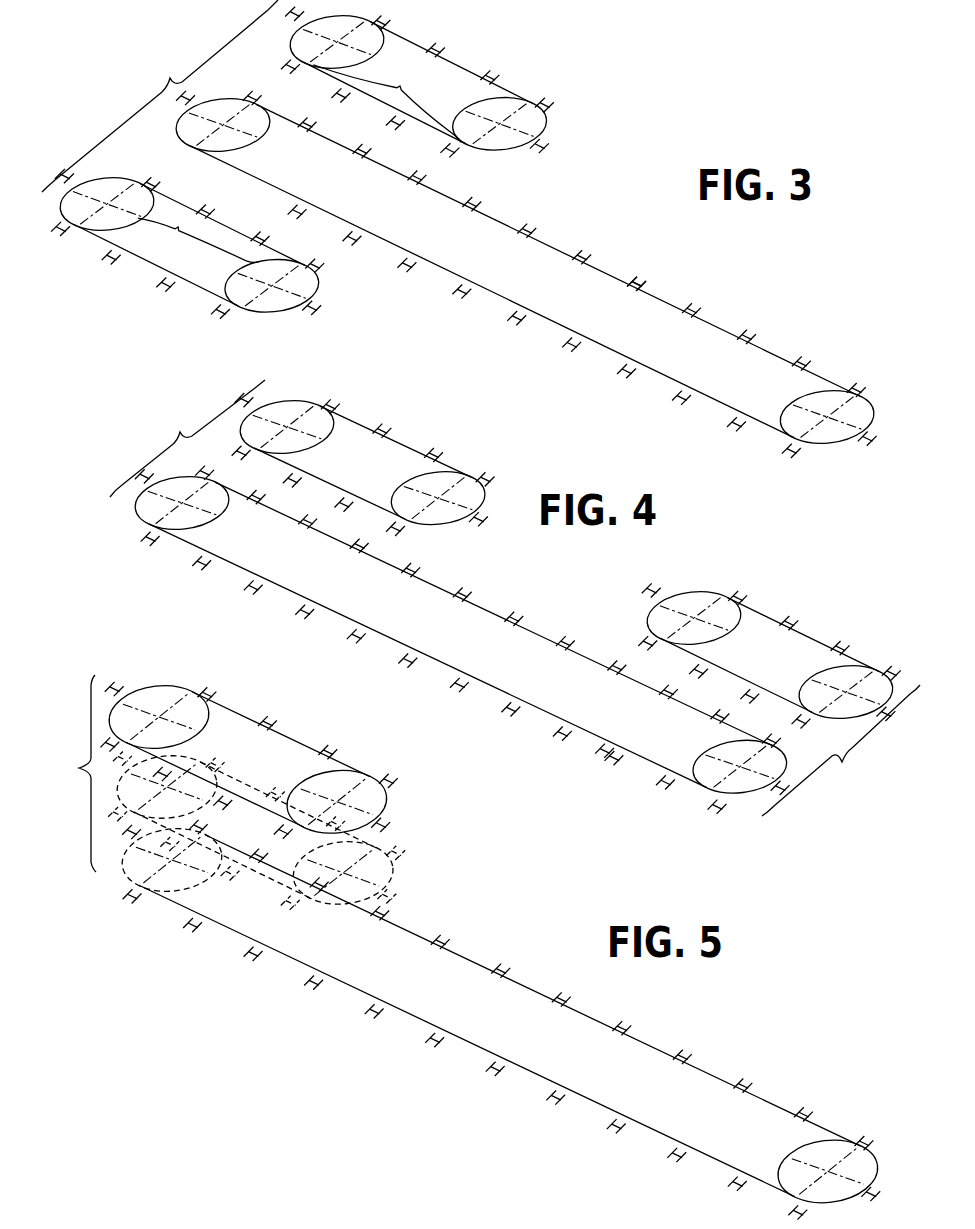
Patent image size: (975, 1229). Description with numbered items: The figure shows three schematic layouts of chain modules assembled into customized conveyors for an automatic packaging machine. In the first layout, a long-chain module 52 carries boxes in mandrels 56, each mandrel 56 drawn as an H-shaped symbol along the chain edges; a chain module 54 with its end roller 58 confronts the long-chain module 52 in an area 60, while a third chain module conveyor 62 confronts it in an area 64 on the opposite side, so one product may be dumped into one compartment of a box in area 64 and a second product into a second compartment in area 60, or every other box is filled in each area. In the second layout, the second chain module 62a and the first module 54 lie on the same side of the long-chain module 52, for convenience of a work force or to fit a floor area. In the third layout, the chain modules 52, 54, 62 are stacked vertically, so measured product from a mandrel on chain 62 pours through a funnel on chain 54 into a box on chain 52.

In FIG. 3, the long-chain module 52 is at (556, 246).
In FIG. 4, the long-chain module 52 is at (489, 607).
In FIG. 5, the long-chain module 52 is at (471, 957).
In FIG. 3, the chain module 54 is at (444, 105).
In FIG. 4, the chain module 54 is at (411, 444).
In FIG. 5, the chain module 54 is at (396, 877).
In FIG. 3, the mandrel 56 is at (643, 278).
In FIG. 4, the mandrel 56 is at (599, 757).
In FIG. 3, the end roller 58 is at (560, 100).
In FIG. 3, the area 60 is at (482, 46).
In FIG. 3, the third chain module conveyor 62 is at (186, 246).
In FIG. 5, the third chain module conveyor 62 is at (295, 734).
In FIG. 4, the second chain module 62a is at (816, 637).
In FIG. 3, the area 64 is at (134, 303).